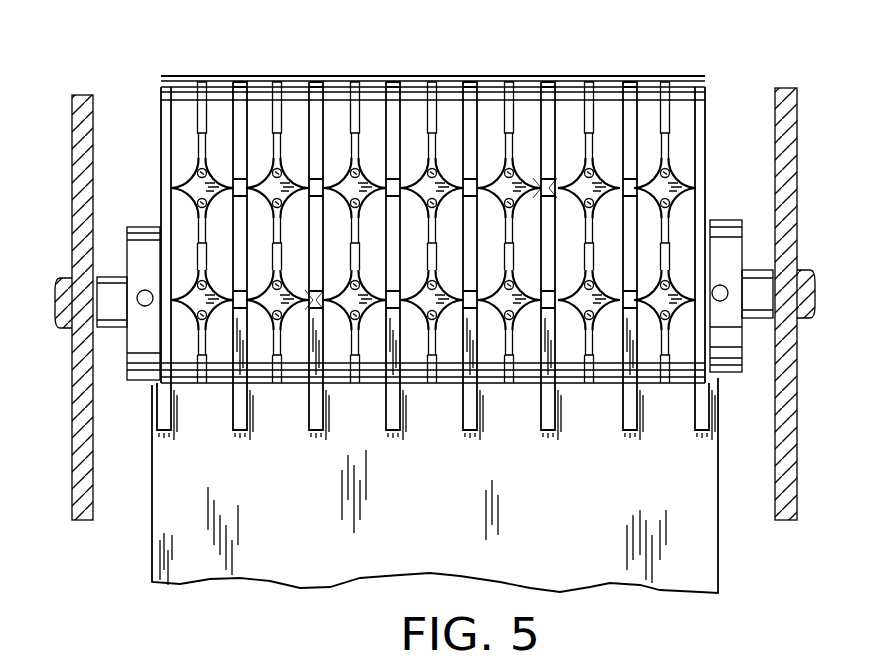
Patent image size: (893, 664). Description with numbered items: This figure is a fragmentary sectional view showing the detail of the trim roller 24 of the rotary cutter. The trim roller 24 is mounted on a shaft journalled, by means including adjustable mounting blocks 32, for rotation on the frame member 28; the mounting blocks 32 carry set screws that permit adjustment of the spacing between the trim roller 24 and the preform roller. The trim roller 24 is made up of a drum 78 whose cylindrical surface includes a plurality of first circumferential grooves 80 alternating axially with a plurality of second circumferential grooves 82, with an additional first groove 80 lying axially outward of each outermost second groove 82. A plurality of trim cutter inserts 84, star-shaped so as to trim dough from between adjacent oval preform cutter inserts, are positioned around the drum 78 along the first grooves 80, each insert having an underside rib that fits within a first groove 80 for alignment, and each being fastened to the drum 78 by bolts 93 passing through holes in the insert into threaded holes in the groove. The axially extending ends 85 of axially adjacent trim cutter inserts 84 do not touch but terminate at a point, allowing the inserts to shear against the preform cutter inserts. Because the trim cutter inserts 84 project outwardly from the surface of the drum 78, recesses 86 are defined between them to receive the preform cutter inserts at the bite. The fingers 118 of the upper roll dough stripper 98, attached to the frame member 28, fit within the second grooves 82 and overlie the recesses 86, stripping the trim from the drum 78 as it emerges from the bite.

The trim roller 24 is at (703, 93).
The frame member 28 is at (88, 231).
The adjustable mounting block 32 is at (135, 376).
The drum 78 is at (182, 98).
The first circumferential groove 80 is at (198, 80).
The second circumferential groove 82 is at (237, 82).
The trim cutter insert 84 is at (187, 190).
The axially extending end 85 is at (563, 183).
The recess 86 is at (600, 203).
The bolt 93 is at (590, 196).
The upper roll dough stripper 98 is at (697, 567).
The finger 118 is at (238, 403).